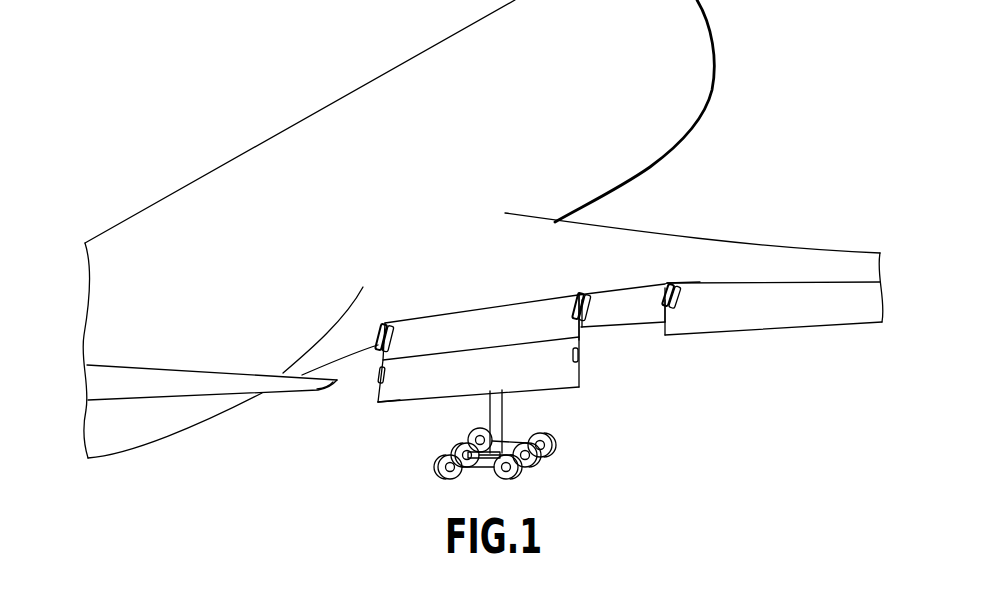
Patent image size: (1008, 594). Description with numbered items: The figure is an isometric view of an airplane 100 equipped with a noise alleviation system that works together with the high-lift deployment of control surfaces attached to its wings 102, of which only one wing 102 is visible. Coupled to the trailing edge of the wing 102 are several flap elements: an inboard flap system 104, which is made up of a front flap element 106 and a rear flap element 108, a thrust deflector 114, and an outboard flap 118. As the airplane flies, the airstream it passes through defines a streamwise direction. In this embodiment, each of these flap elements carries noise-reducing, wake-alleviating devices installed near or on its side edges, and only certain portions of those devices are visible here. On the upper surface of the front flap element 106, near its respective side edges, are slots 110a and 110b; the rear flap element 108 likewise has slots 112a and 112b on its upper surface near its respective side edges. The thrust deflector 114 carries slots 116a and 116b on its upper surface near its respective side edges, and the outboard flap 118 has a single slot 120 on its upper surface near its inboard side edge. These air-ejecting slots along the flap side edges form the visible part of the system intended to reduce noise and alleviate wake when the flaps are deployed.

The airplane 100 is at (358, 78).
The wing 102 is at (793, 245).
The inboard flap system 104 is at (597, 371).
The front flap element 106 is at (433, 342).
The rear flap element 108 is at (378, 402).
The slot 110a is at (577, 295).
The slot 110b is at (393, 331).
The slot 112a is at (575, 364).
The slot 112b is at (378, 376).
The thrust deflector 114 is at (625, 318).
The slot 116a is at (672, 283).
The slot 116b is at (670, 286).
The outboard flap 118 is at (840, 325).
The slot 120 is at (683, 292).